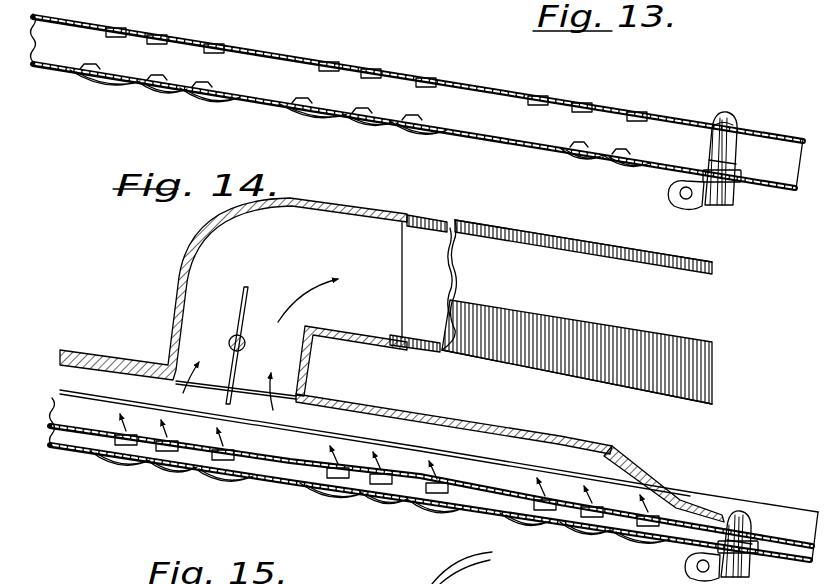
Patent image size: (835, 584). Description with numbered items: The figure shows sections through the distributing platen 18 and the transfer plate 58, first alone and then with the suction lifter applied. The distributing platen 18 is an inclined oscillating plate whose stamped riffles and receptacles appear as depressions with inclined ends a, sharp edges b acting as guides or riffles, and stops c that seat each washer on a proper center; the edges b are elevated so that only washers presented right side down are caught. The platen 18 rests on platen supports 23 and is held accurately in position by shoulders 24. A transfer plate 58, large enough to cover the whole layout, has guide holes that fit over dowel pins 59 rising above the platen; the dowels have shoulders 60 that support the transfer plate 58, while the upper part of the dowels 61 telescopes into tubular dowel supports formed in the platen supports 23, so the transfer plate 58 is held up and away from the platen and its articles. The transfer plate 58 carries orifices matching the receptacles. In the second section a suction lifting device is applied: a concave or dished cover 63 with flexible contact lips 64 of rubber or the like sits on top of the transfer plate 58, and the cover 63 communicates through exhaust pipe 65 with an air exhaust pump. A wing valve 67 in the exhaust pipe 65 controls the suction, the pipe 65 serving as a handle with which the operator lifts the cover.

In FIG. 13, the distributing platen 18 is at (263, 100).
In FIG. 14, the distributing platen 18 is at (284, 476).
In FIG. 13, the platen supports 23 is at (736, 200).
In FIG. 14, the platen supports 23 is at (752, 572).
In FIG. 13, the shoulders 24 is at (740, 172).
In FIG. 14, the shoulders 24 is at (718, 555).
In FIG. 13, the transfer plate 58 is at (489, 92).
In FIG. 14, the transfer plate 58 is at (484, 478).
In FIG. 13, the dowel pins 59 is at (722, 121).
In FIG. 14, the dowel pins 59 is at (745, 519).
In FIG. 13, the shoulders 60 is at (718, 137).
In FIG. 14, the shoulders 60 is at (740, 522).
In FIG. 13, the upper part of the dowels 61 is at (738, 147).
In FIG. 14, the upper part of the dowels 61 is at (756, 538).
In FIG. 14, the dished cover 63 is at (504, 430).
In FIG. 14, the flexible contact lips 64 is at (700, 509).
In FIG. 14, the exhaust pipe 65 is at (543, 240).
In FIG. 14, the wing valve 67 is at (241, 303).
In FIG. 14, the inclined ends a is at (92, 452).
In FIG. 14, the sharp edges b is at (126, 452).
In FIG. 14, the stops c is at (108, 458).